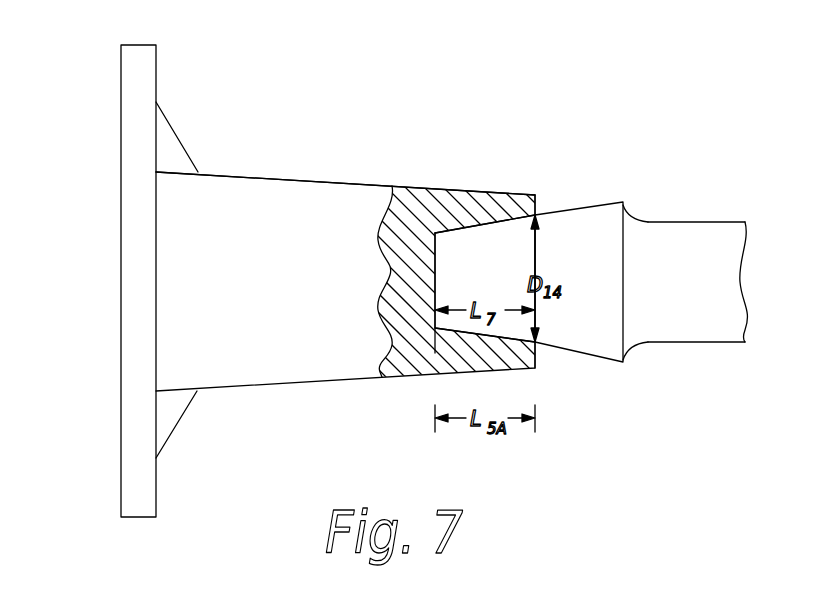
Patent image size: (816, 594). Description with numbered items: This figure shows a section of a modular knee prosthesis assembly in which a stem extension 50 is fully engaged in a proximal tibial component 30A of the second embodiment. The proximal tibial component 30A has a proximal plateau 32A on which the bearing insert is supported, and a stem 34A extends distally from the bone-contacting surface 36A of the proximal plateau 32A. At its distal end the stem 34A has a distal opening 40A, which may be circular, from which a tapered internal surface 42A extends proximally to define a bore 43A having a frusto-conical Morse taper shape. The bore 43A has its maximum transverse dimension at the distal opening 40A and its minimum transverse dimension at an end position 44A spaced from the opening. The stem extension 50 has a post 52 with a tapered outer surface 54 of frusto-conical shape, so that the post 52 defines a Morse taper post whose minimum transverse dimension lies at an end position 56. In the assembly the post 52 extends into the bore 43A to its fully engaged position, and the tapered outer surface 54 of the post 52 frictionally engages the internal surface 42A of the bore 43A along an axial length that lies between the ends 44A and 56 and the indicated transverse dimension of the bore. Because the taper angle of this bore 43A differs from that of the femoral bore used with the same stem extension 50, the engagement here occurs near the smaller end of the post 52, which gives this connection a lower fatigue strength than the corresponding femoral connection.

The proximal tibial component 30A is at (233, 367).
The proximal plateau 32A is at (121, 258).
The stem 34A is at (318, 198).
The bone-contacting surface 36A is at (156, 330).
The distal opening 40A is at (536, 216).
The internal surface 42A is at (500, 212).
The bore 43A is at (485, 278).
The end position 44A is at (437, 284).
The stem extension 50 is at (702, 233).
The post 52 is at (610, 220).
The tapered outer surface 54 is at (607, 290).
The end position 56 is at (437, 262).